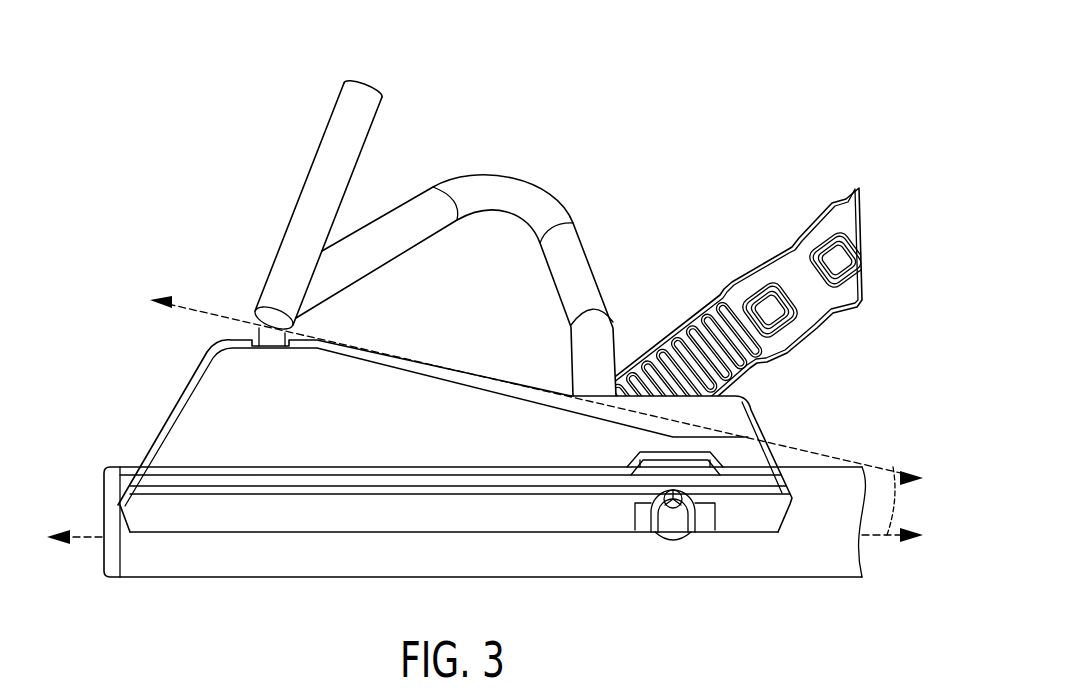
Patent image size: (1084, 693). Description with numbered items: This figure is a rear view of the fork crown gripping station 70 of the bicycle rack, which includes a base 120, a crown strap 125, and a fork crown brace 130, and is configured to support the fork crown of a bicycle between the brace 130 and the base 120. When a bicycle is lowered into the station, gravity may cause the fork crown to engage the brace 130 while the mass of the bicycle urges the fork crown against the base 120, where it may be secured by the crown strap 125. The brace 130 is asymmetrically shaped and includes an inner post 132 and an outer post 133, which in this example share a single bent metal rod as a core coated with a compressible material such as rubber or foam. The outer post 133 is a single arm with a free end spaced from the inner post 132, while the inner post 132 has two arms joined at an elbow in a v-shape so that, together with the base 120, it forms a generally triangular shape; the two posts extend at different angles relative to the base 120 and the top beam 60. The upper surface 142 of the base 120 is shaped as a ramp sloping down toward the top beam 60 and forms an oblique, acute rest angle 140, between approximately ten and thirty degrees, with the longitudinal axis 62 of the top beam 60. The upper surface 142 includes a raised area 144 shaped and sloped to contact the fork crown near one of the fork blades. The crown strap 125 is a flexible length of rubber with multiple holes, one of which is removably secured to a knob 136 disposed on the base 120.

The top beam 60 is at (152, 562).
The longitudinal axis 62 is at (884, 467).
The fork crown gripping station 70 is at (193, 177).
The base 120 is at (188, 410).
The crown strap 125 is at (770, 262).
The fork crown brace 130 is at (422, 115).
The inner post 132 is at (503, 188).
The outer post 133 is at (345, 110).
The knob 136 is at (678, 522).
The rest angle 140 is at (895, 506).
The upper surface 142 is at (450, 345).
The raised area 144 is at (733, 413).